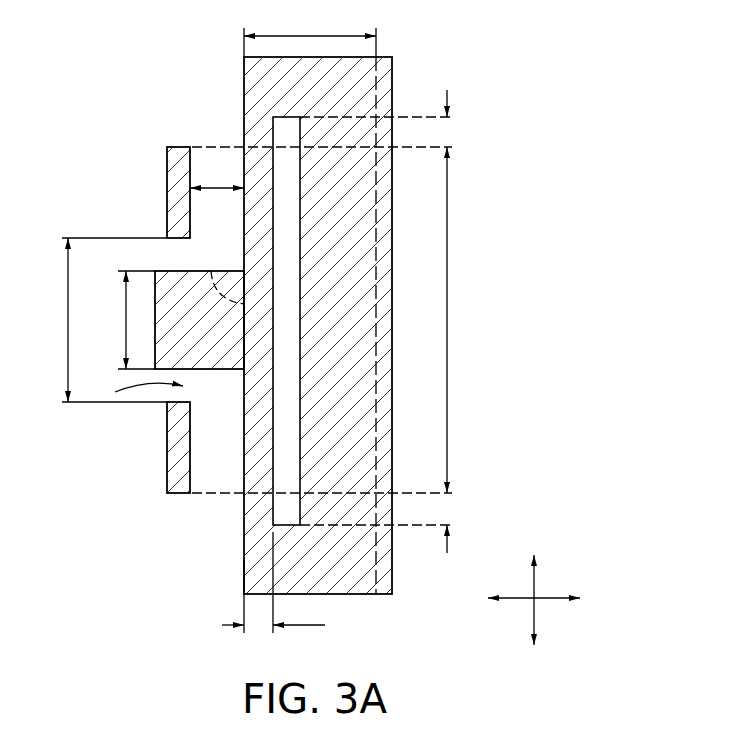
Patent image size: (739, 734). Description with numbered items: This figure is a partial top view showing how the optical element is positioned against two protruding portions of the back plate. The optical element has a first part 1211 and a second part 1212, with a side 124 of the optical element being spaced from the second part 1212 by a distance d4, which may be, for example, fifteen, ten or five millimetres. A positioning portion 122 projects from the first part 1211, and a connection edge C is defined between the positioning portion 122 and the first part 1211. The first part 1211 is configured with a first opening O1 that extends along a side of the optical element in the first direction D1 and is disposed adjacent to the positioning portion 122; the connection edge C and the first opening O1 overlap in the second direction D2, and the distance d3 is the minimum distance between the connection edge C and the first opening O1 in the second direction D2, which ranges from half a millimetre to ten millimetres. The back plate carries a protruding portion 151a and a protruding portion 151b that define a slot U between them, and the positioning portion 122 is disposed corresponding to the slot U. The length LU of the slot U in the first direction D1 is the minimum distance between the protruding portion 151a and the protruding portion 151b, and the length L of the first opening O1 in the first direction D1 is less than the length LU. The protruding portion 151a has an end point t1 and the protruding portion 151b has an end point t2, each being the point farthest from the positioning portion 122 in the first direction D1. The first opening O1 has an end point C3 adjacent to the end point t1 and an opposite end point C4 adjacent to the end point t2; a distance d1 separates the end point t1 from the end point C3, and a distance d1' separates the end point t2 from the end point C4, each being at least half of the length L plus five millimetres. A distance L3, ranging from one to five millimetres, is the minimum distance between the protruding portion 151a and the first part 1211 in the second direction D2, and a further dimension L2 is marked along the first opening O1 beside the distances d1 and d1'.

The first part 1211 is at (270, 85).
The second part 1212 is at (385, 62).
The first opening O1 is at (287, 230).
The end point C3 is at (300, 119).
The end point C4 is at (300, 525).
The positioning portion 122 is at (173, 287).
The connection edge C is at (211, 270).
The protruding portion 151a is at (176, 214).
The protruding portion 151b is at (176, 432).
The end point t1 is at (167, 147).
The end point t2 is at (167, 493).
The side 124 is at (244, 560).
The distance d4 is at (310, 35).
The distance d1 is at (461, 116).
The distance d1' is at (463, 526).
The length L2 is at (460, 320).
The distance L3 is at (217, 175).
The length LU is at (101, 320).
The length L is at (129, 320).
The slot U is at (140, 393).
The distance d3 is at (273, 582).
The first direction D1 is at (534, 587).
The second direction D2 is at (549, 599).